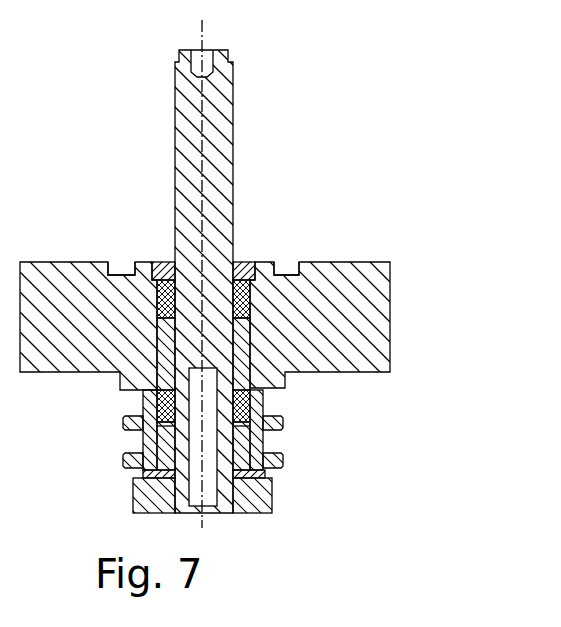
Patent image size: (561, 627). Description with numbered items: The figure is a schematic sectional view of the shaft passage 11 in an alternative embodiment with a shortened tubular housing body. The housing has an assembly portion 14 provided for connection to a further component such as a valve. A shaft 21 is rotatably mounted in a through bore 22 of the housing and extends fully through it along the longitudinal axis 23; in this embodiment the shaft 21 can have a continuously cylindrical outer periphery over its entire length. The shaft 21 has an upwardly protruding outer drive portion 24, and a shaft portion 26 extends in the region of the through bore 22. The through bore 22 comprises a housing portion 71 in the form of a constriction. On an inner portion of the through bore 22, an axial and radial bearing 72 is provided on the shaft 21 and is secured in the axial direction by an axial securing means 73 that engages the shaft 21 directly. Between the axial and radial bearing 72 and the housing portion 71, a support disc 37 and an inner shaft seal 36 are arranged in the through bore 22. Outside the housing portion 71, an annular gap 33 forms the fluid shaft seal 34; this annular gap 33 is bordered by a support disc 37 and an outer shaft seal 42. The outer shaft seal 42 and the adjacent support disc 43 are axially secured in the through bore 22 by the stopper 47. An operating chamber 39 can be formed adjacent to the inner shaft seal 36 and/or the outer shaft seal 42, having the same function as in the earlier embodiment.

The shaft passage 11 is at (265, 100).
The assembly portion 14 is at (296, 433).
The shaft 21 is at (147, 103).
The through bore 22 is at (257, 350).
The longitudinal axis 23 is at (210, 30).
The drive portion 24 is at (233, 133).
The shaft portion 26 is at (283, 378).
The annular gap 33 is at (237, 350).
The fluid shaft seal 34 is at (322, 375).
The inner shaft seal 36 is at (143, 412).
The support disc 37 is at (143, 393).
The operating chamber 39 is at (163, 262).
The outer shaft seal 42 is at (158, 285).
The support disc 43 is at (157, 302).
The stopper 47 is at (243, 262).
The housing portion 71 is at (263, 392).
The axial and radial bearing 72 is at (270, 475).
The axial securing means 73 is at (262, 495).